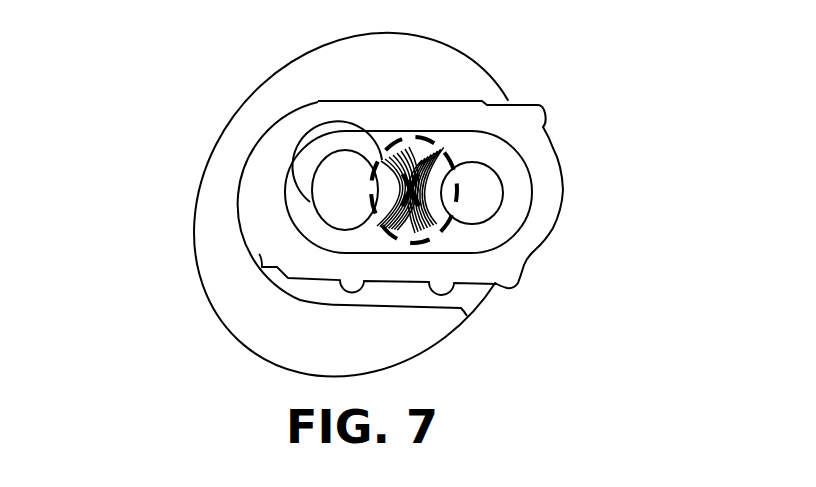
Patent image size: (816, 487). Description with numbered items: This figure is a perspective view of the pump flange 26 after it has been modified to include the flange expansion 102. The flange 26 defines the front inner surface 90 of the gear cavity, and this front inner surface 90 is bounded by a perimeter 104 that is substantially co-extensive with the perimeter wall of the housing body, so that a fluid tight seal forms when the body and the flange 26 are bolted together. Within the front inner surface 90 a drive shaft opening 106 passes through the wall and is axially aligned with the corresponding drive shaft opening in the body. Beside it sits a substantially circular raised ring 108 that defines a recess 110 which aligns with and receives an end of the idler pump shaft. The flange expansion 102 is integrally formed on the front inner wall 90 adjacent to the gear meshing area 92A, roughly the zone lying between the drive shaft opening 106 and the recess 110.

The flange 26 is at (201, 62).
The front inner surface 90 is at (331, 268).
The seal member 92A is at (428, 140).
The flange expansion 102 is at (433, 232).
The perimeter 104 is at (245, 248).
The drive shaft opening 106 is at (340, 193).
The substantially circular raised ring 108 is at (515, 165).
The recess 110 is at (475, 194).